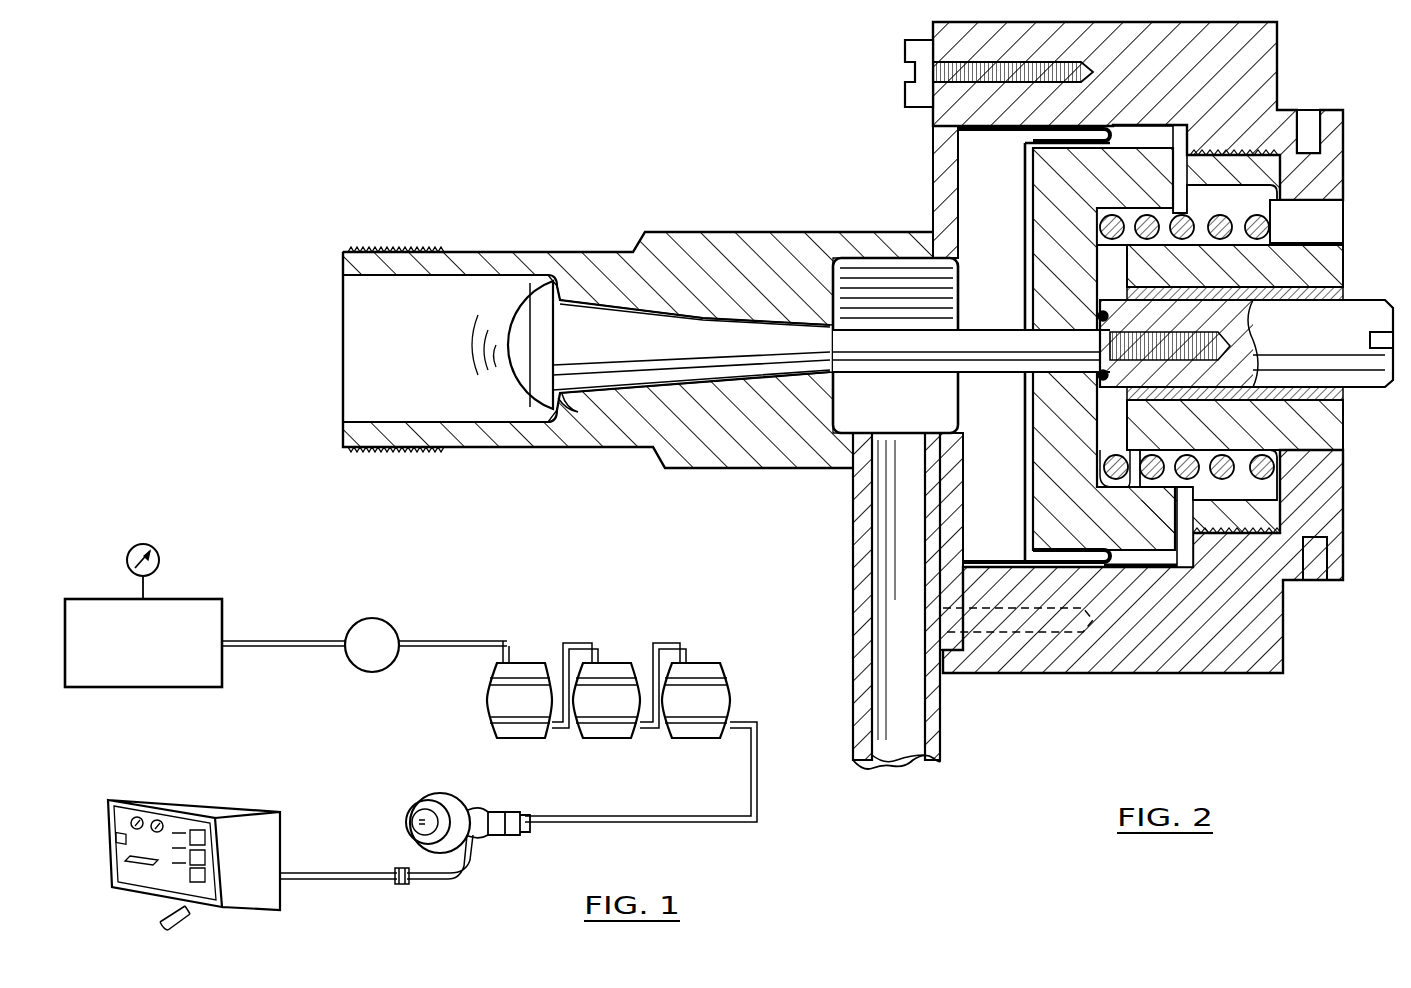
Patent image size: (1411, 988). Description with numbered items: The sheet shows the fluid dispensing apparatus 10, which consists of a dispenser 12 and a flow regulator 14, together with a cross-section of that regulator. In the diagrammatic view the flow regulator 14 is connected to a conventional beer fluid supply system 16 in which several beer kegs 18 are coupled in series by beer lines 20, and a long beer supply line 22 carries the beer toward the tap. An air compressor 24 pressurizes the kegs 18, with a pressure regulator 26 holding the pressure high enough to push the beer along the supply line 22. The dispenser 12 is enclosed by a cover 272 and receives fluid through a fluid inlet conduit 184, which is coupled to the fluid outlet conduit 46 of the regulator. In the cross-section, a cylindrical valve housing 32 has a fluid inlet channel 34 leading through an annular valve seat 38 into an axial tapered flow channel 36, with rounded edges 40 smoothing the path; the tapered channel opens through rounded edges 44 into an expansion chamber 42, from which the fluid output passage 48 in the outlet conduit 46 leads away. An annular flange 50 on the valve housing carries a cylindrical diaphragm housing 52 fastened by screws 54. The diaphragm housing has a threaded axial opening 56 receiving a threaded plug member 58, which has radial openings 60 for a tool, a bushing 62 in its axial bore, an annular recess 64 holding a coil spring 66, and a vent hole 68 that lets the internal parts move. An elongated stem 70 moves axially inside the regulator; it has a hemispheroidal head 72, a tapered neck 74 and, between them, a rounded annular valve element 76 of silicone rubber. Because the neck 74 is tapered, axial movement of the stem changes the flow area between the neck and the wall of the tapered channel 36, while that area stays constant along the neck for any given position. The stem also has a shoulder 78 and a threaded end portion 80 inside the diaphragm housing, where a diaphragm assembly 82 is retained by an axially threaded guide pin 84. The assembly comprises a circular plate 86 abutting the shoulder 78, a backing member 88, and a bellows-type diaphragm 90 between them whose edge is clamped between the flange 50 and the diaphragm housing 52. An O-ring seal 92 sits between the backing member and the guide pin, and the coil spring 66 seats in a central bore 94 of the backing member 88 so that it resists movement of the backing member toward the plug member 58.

In FIG. 1, the fluid dispensing apparatus 10 is at (368, 817).
In FIG. 1, the dispenser 12 is at (198, 799).
In FIG. 2, the flow regulator 14 is at (832, 156).
In FIG. 1, the flow regulator 14 is at (453, 793).
In FIG. 1, the fluid supply system 16 is at (322, 588).
In FIG. 1, the beer kegs 18 is at (532, 738).
In FIG. 1, the beer lines 20 is at (597, 618).
In FIG. 1, the beer supply line 22 is at (753, 830).
In FIG. 1, the air compressor 24 is at (196, 599).
In FIG. 1, the pressure regulator 26 is at (373, 618).
In FIG. 2, the valve housing 32 is at (715, 232).
In FIG. 1, the valve housing 32 is at (483, 809).
In FIG. 2, the fluid inlet channel 34 is at (345, 352).
In FIG. 2, the tapered flow channel 36 is at (697, 324).
In FIG. 2, the annular valve seat 38 is at (540, 292).
In FIG. 2, the rounded edges 40 is at (569, 404).
In FIG. 2, the expansion chamber 42 is at (912, 429).
In FIG. 2, the rounded edges 44 is at (837, 374).
In FIG. 2, the fluid outlet conduit 46 is at (853, 528).
In FIG. 1, the fluid outlet conduit 46 is at (422, 881).
In FIG. 2, the fluid output passage 48 is at (907, 745).
In FIG. 2, the annular flange 50 is at (930, 187).
In FIG. 2, the diaphragm housing 52 is at (1195, 673).
In FIG. 2, the screws 54 is at (906, 59).
In FIG. 2, the threaded axial opening 56 is at (1279, 530).
In FIG. 2, the threaded plug member 58 is at (1342, 438).
In FIG. 2, the radial openings 60 is at (1310, 110).
In FIG. 2, the bushing 62 is at (1333, 286).
In FIG. 2, the annular recess 64 is at (1253, 197).
In FIG. 2, the coil spring 66 is at (1268, 489).
In FIG. 2, the vent hole 68 is at (1323, 218).
In FIG. 2, the elongated stem 70 is at (945, 349).
In FIG. 2, the hemispheroidal head 72 is at (472, 332).
In FIG. 2, the tapered neck 74 is at (676, 373).
In FIG. 2, the annular valve element 76 is at (548, 333).
In FIG. 2, the shoulder 78 is at (1022, 390).
In FIG. 2, the threaded end portion 80 is at (1213, 346).
In FIG. 2, the diaphragm assembly 82 is at (1012, 250).
In FIG. 2, the guide pin 84 is at (1353, 382).
In FIG. 2, the circular plate 86 is at (1030, 448).
In FIG. 2, the backing member 88 is at (1085, 452).
In FIG. 2, the bellows-type diaphragm 90 is at (968, 138).
In FIG. 2, the O-ring seal 92 is at (1095, 316).
In FIG. 2, the central bore 94 is at (1137, 475).
In FIG. 1, the fluid inlet conduit 184 is at (317, 881).
In FIG. 1, the cover 272 is at (130, 843).